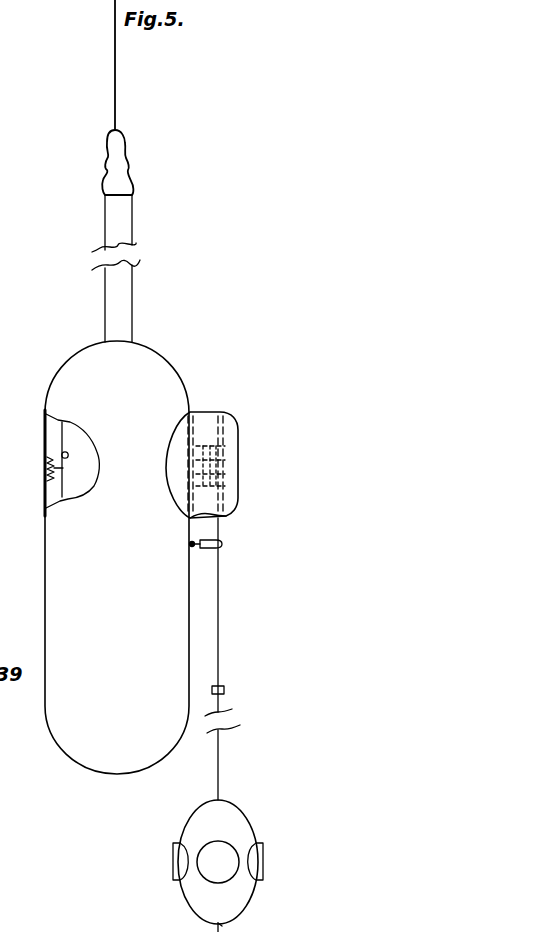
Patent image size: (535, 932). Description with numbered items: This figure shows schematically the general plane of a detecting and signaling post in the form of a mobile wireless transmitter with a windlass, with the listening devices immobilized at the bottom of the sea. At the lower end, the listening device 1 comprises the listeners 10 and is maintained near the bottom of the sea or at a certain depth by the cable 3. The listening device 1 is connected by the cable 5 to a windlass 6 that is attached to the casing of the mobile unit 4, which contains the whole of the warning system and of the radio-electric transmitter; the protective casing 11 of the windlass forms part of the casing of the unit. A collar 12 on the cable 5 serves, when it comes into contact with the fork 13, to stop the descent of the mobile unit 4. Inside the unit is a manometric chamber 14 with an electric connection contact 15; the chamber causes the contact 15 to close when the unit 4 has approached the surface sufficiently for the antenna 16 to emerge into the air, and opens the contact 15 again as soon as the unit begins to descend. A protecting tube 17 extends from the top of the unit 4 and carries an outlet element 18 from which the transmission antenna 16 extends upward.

The listening device 1 is at (244, 826).
The cable 3 is at (222, 926).
The mobile unit 4 is at (91, 759).
The cable 5 is at (218, 767).
The windlass 6 is at (209, 462).
The listeners 10 is at (176, 862).
The protective casing of the windlass 11 is at (238, 506).
The collar 12 is at (224, 690).
The fork 13 is at (222, 545).
The manometric chamber 14 is at (47, 466).
The electric connection contact 15 is at (61, 455).
The antenna 16 is at (118, 80).
The protecting tube 17 is at (118, 229).
The outlet element 18 is at (120, 171).